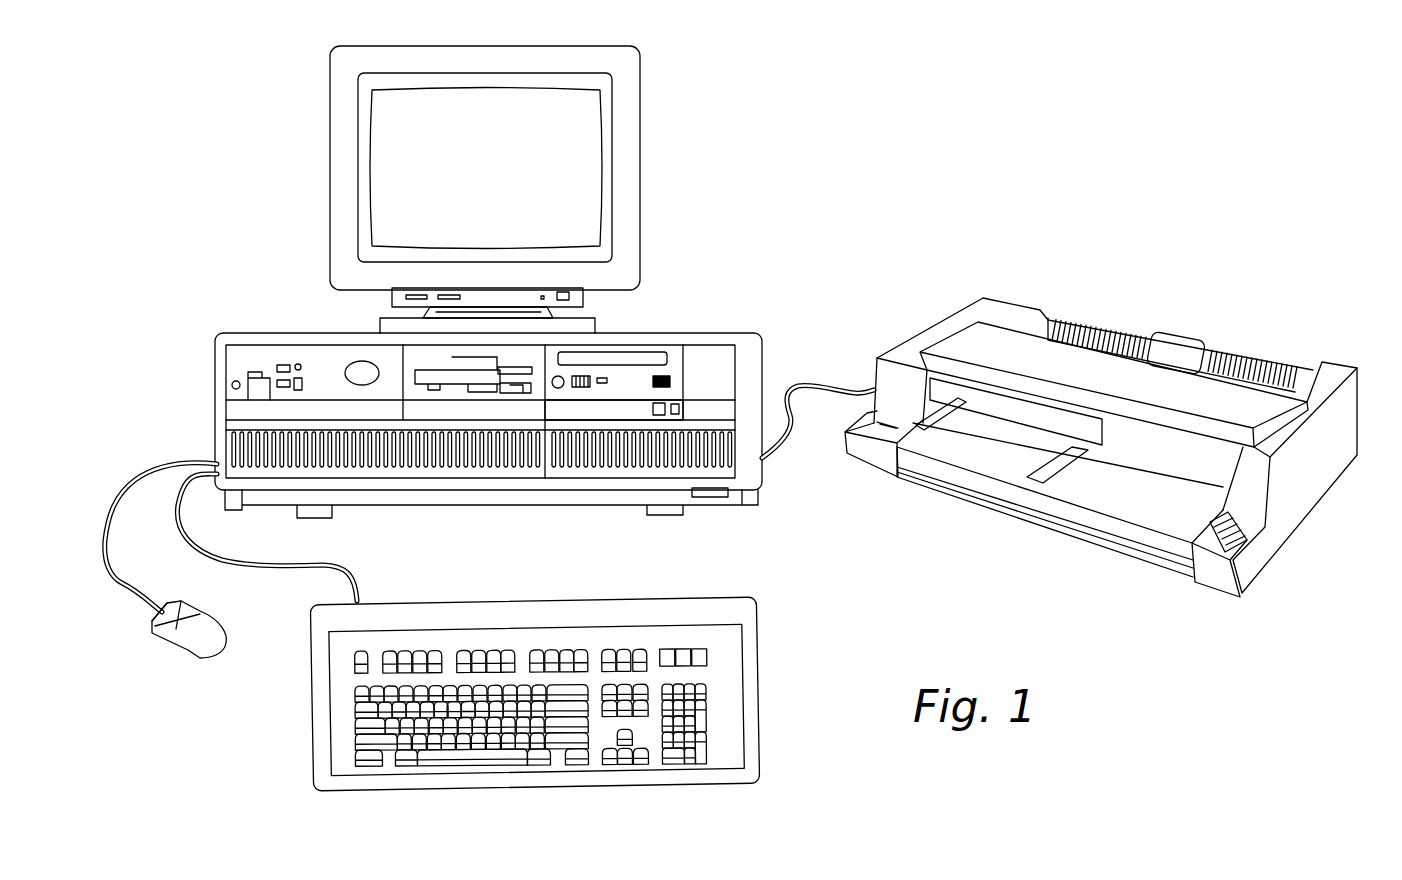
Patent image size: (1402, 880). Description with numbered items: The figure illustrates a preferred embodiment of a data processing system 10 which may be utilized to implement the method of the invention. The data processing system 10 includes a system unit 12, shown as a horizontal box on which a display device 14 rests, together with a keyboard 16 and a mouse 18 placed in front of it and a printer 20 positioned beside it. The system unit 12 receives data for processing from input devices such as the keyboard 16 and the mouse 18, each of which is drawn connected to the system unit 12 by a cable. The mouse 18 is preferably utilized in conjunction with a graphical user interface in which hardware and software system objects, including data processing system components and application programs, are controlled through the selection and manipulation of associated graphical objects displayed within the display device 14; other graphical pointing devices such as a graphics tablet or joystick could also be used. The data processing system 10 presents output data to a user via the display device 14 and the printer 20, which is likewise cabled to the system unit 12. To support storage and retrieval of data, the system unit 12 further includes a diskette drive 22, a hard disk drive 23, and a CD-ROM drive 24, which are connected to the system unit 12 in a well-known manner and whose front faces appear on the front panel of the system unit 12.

The data processing system 10 is at (832, 88).
The system unit 12 is at (492, 410).
The display device 14 is at (660, 182).
The keyboard 16 is at (607, 591).
The mouse 18 is at (178, 643).
The printer 20 is at (895, 314).
The diskette drive 22 is at (470, 381).
The hard disk drive 23 is at (620, 407).
The CD-ROM drive 24 is at (634, 358).